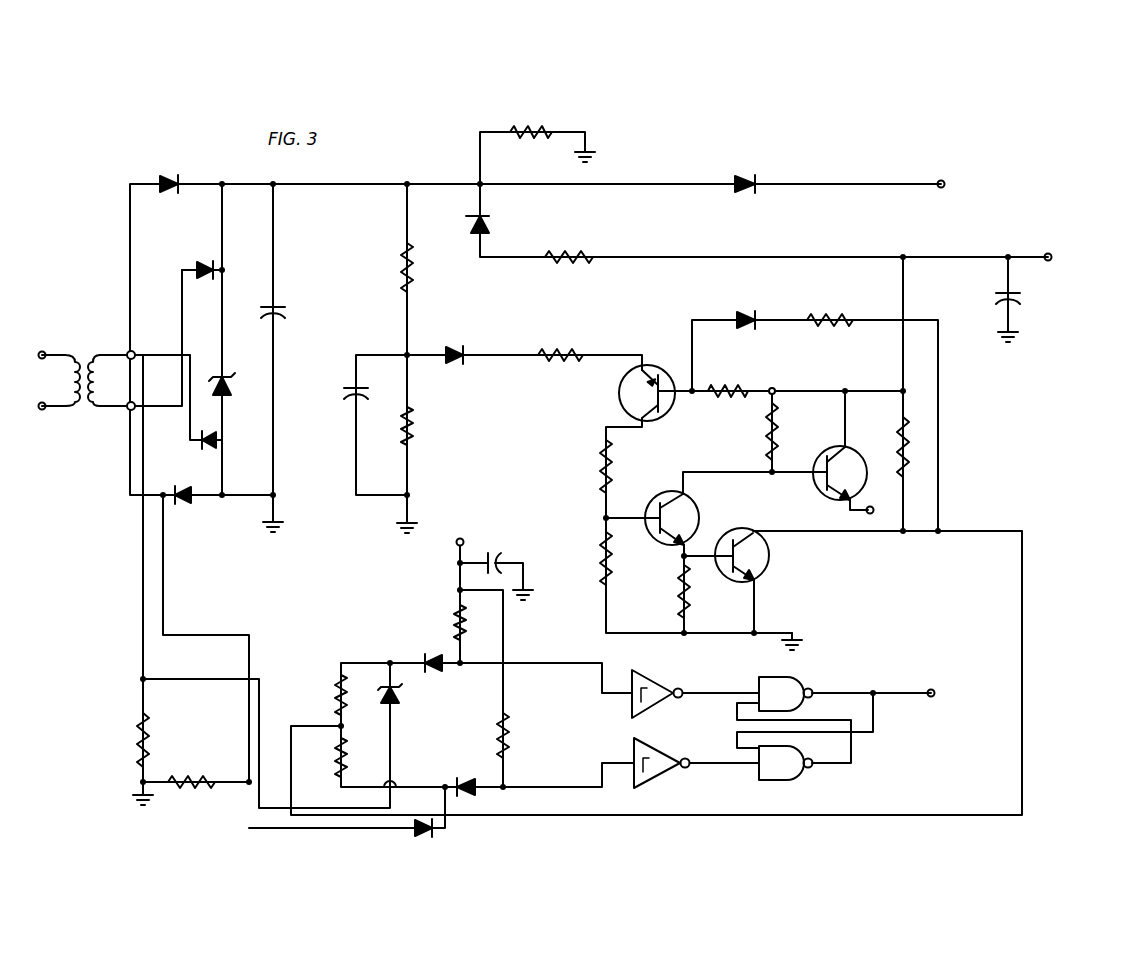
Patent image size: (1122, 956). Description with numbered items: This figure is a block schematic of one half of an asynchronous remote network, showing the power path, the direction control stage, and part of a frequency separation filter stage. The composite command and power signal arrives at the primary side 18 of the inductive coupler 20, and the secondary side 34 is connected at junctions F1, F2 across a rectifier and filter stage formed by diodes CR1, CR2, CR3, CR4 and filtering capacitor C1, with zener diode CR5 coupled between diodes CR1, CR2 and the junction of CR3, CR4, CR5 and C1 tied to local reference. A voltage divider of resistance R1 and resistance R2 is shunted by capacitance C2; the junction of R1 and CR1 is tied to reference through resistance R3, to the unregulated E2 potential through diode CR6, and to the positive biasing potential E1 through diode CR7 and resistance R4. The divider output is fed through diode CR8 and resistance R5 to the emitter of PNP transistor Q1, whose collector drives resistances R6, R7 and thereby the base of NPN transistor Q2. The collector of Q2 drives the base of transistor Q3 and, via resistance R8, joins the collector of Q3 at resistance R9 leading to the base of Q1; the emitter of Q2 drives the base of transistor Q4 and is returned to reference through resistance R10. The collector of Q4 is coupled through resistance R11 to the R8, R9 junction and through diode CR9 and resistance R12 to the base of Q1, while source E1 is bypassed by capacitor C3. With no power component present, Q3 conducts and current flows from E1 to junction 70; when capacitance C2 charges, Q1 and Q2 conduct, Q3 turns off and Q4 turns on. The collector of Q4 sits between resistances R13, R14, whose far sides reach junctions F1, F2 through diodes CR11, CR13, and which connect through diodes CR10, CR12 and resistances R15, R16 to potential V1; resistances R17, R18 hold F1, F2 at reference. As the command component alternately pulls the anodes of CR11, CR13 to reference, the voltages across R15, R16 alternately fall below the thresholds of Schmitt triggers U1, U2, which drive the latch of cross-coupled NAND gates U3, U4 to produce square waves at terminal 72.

The primary side 18 is at (65, 358).
The inductive coupler 20 is at (82, 355).
The secondary side 34 is at (98, 400).
The junction F1 is at (134, 351).
The junction F2 is at (134, 404).
The diode CR1 is at (165, 178).
The diode CR2 is at (195, 297).
The diode CR3 is at (231, 441).
The diode CR4 is at (195, 488).
The zener diode CR5 is at (236, 397).
The diode CR6 is at (742, 173).
The diode CR7 is at (497, 220).
The diode CR8 is at (445, 346).
The diode CR9 is at (735, 309).
The diode CR10 is at (454, 672).
The diode CR11 is at (410, 702).
The diode CR12 is at (451, 777).
The diode CR13 is at (440, 832).
The resistance R1 is at (422, 267).
The resistance R2 is at (422, 426).
The resistance R3 is at (531, 146).
The resistance R4 is at (569, 246).
The resistance R5 is at (560, 344).
The resistance R6 is at (600, 462).
The resistance R7 is at (621, 558).
The resistance R8 is at (766, 437).
The resistance R9 is at (750, 388).
The resistance R10 is at (703, 591).
The resistance R11 is at (921, 447).
The resistance R12 is at (830, 307).
The resistance R13 is at (322, 695).
The resistance R14 is at (359, 757).
The resistance R15 is at (478, 622).
The resistance R16 is at (523, 735).
The resistance R17 is at (191, 772).
The resistance R18 is at (163, 740).
The filtering capacitor C1 is at (287, 304).
The capacitance C2 is at (343, 384).
The alternating current bypass capacitor C3 is at (1024, 297).
The PNP type transistor Q1 is at (620, 394).
The NPN type transistor Q2 is at (660, 500).
The NPN type transistor Q3 is at (830, 455).
The NPN type transistor Q4 is at (760, 572).
The Schmitt trigger voltage comparator U1 is at (657, 682).
The Schmitt trigger voltage comparator U2 is at (654, 780).
The NAND gate U3 is at (788, 680).
The NAND gate U4 is at (790, 775).
The unregulated E2 potential E2 is at (952, 195).
The source of biasing current E1 is at (1055, 243).
The positive potential V1 is at (479, 544).
The junction 70 is at (882, 512).
The terminal 72 is at (930, 690).